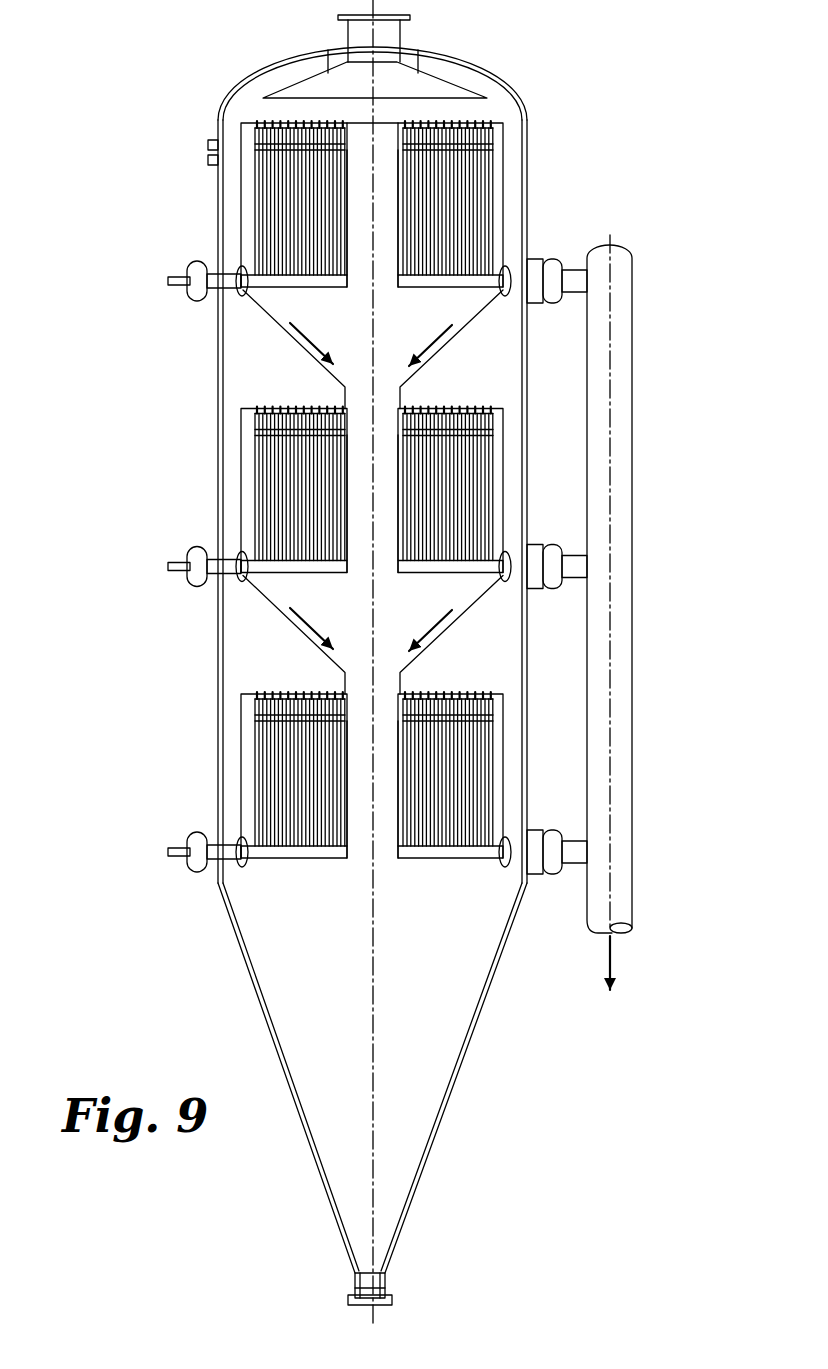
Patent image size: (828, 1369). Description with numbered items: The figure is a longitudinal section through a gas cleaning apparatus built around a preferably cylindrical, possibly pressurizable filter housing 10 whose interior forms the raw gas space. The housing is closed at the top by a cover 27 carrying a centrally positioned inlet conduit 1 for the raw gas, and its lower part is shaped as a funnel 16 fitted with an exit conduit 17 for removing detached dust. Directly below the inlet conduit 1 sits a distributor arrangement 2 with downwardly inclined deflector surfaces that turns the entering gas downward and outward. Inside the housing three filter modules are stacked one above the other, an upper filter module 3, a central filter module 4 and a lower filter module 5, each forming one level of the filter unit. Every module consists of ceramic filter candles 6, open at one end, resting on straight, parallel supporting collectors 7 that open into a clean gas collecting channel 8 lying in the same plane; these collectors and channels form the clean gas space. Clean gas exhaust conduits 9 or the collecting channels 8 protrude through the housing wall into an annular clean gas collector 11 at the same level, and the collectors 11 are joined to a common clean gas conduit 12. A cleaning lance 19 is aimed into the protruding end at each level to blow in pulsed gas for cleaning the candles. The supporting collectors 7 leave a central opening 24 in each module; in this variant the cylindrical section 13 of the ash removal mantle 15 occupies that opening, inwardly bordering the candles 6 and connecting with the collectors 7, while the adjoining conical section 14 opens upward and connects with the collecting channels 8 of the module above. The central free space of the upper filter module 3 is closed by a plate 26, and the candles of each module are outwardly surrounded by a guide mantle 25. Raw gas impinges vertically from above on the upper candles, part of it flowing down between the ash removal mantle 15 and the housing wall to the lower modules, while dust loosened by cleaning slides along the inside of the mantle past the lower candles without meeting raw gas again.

The inlet conduit 1 is at (400, 22).
The distributor arrangement 2 is at (290, 88).
The upper filter module 3 is at (204, 160).
The central filter module 4 is at (235, 457).
The lower filter module 5 is at (235, 760).
The filter candles 6 is at (328, 230).
The supporting collectors 7 is at (317, 288).
The clean gas collecting channel 8 is at (505, 297).
The clean gas exhaust conduits 9 is at (230, 297).
The filter housing 10 is at (534, 403).
The annular clean gas collector 11 is at (197, 302).
The clean gas conduit 12 is at (620, 883).
The cylindrical section 13 is at (345, 243).
The conical section 14 is at (430, 355).
The ash removal mantle 15 is at (292, 355).
The funnel 16 is at (274, 1046).
The exit conduit 17 is at (395, 1303).
The cleaning lance 19 is at (162, 282).
The central opening 24 is at (361, 155).
The guide mantle 25 is at (241, 227).
The plate 26 is at (367, 123).
The cover 27 is at (483, 61).